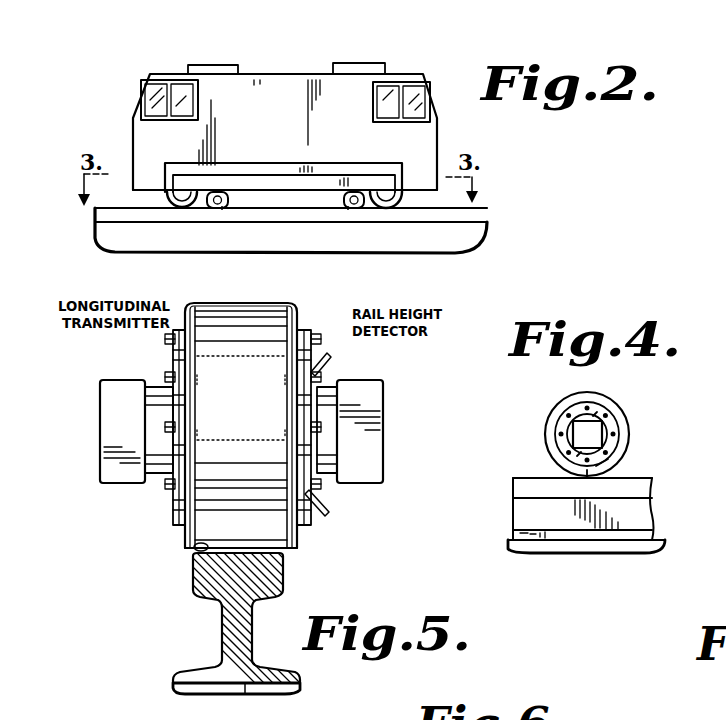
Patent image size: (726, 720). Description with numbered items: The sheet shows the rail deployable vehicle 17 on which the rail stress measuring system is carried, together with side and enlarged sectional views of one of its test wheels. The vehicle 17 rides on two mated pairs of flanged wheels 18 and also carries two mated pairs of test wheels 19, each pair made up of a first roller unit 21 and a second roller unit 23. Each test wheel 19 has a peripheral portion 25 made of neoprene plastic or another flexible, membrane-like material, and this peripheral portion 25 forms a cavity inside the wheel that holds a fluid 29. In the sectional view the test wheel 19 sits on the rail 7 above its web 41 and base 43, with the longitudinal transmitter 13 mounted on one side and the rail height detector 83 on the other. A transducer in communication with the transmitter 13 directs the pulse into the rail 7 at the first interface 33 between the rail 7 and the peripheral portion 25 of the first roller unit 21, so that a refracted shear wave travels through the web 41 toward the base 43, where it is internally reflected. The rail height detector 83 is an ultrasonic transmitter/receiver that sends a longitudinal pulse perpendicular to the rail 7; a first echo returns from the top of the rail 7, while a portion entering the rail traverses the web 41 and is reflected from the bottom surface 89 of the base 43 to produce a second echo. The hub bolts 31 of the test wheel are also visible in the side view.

In FIG. 4, the rail 7 is at (514, 504).
In FIG. 5, the transmitter 13 is at (120, 386).
In FIG. 2, the deployable vehicle 17 is at (148, 74).
In FIG. 2, the flanged wheels 18 is at (175, 206).
In FIG. 2, the test wheels 19 is at (212, 208).
In FIG. 5, the test wheels 19 is at (298, 306).
In FIG. 4, the test wheels 19 is at (545, 442).
In FIG. 2, the first roller unit 21 is at (224, 208).
In FIG. 2, the second roller unit 23 is at (345, 208).
In FIG. 4, the peripheral portion 25 is at (610, 416).
In FIG. 4, the fluid 29 is at (630, 428).
In FIG. 4, the hub bolts 31 is at (566, 424).
In FIG. 5, the first interface 33 is at (192, 549).
In FIG. 4, the first interface 33 is at (612, 462).
In FIG. 5, the web 41 is at (238, 624).
In FIG. 4, the web 41 is at (655, 520).
In FIG. 5, the base 43 is at (192, 677).
In FIG. 4, the base 43 is at (518, 534).
In FIG. 5, the rail height detector 83 is at (360, 386).
In FIG. 5, the bottom surface 89 is at (245, 694).